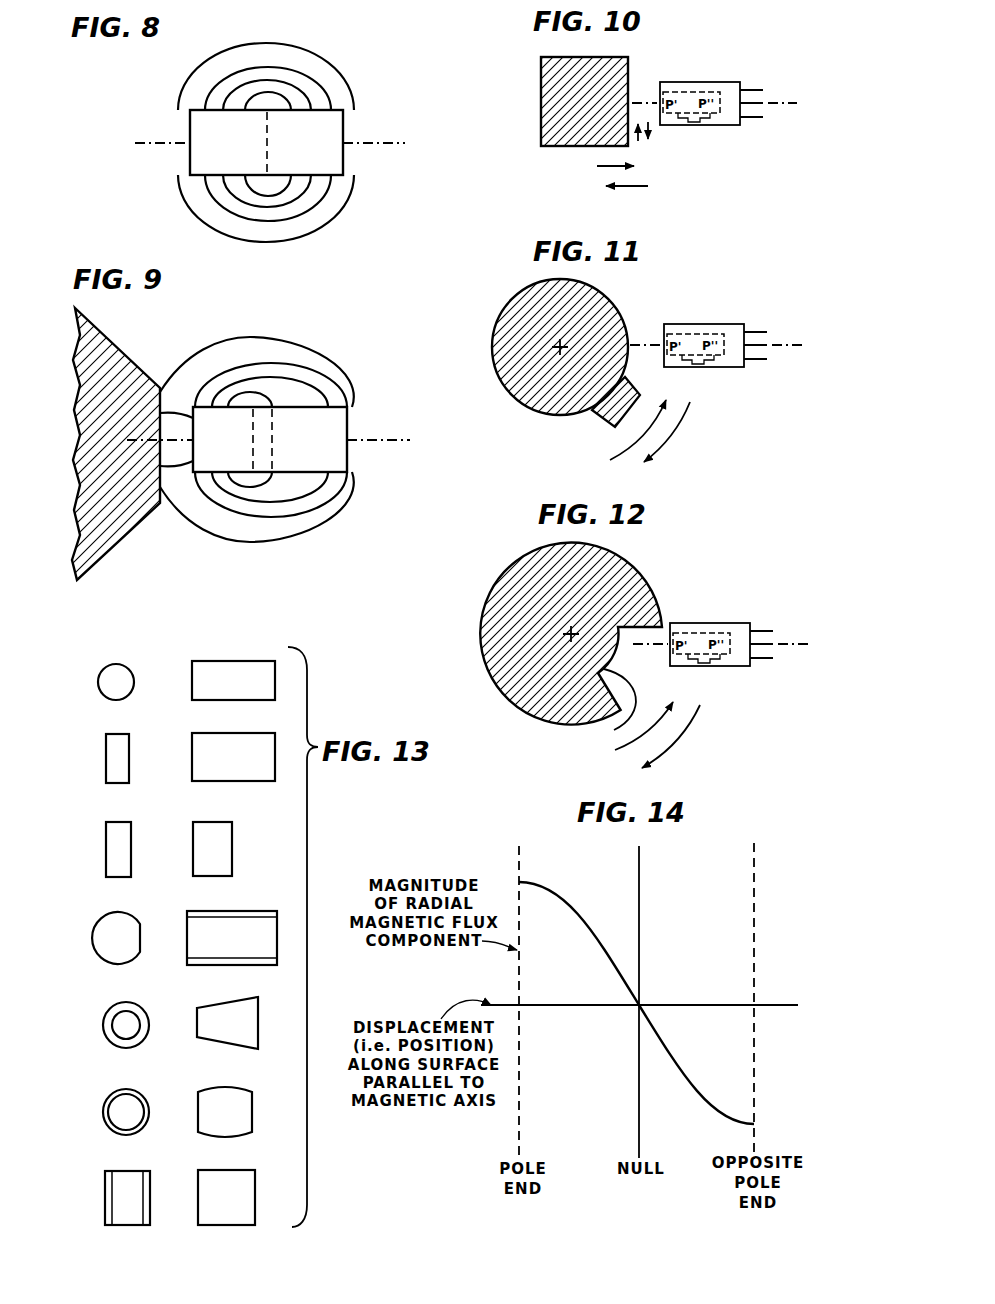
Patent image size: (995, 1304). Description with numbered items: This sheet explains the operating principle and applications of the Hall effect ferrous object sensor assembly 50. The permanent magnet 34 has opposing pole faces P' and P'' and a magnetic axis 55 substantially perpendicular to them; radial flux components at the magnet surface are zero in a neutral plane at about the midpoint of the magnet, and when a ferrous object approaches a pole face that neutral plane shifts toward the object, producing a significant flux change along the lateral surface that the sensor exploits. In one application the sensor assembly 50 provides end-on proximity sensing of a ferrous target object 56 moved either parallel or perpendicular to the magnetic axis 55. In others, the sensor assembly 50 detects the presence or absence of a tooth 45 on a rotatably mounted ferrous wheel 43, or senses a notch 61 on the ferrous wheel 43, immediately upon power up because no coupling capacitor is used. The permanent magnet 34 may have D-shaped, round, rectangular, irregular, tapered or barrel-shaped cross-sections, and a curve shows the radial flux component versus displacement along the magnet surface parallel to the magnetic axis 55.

In FIG. 8, the permanent magnet 34 is at (343, 150).
In FIG. 9, the permanent magnet 34 is at (347, 450).
In FIG. 13, the permanent magnet 34 is at (88, 692).
In FIG. 8, the magnetic axis 55 is at (389, 142).
In FIG. 9, the magnetic axis 55 is at (406, 440).
In FIG. 10, the magnetic axis 55 is at (785, 103).
In FIG. 11, the magnetic axis 55 is at (792, 345).
In FIG. 12, the magnetic axis 55 is at (800, 644).
In FIG. 9, the ferrous target object 56 is at (118, 375).
In FIG. 10, the ferrous target object 56 is at (541, 103).
In FIG. 10, the ferrous object sensor assembly 50 is at (702, 134).
In FIG. 11, the ferrous object sensor assembly 50 is at (702, 380).
In FIG. 12, the ferrous object sensor assembly 50 is at (714, 682).
In FIG. 11, the ferrous wheel 43 is at (611, 295).
In FIG. 12, the ferrous wheel 43 is at (639, 561).
In FIG. 11, the tooth 45 is at (604, 416).
In FIG. 12, the notch 61 is at (614, 730).